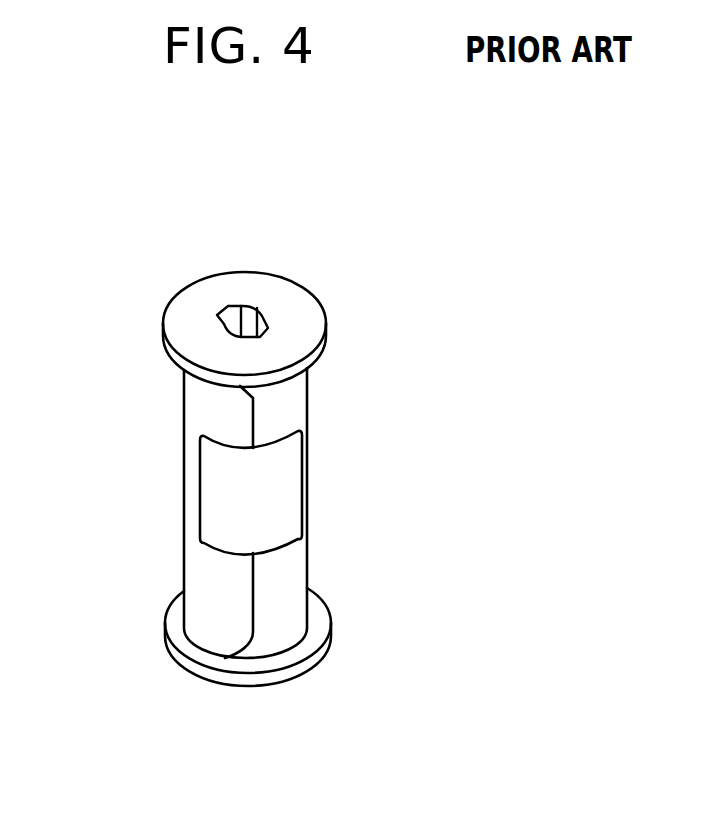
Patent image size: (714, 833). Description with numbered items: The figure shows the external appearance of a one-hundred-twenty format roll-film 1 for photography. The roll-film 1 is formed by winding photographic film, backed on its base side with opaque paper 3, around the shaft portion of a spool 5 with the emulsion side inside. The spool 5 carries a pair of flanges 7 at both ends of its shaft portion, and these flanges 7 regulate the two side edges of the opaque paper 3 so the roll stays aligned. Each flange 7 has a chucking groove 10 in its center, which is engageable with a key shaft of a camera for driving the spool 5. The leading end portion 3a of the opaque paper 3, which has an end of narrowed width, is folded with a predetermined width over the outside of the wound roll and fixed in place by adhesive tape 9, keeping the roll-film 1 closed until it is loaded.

The roll-film 1 is at (352, 252).
The opaque paper 3 is at (297, 407).
The leading end portion 3a is at (220, 418).
The spool 5 is at (257, 687).
The flanges 7 is at (217, 287).
The adhesive tape 9 is at (290, 495).
The chucking groove 10 is at (250, 322).